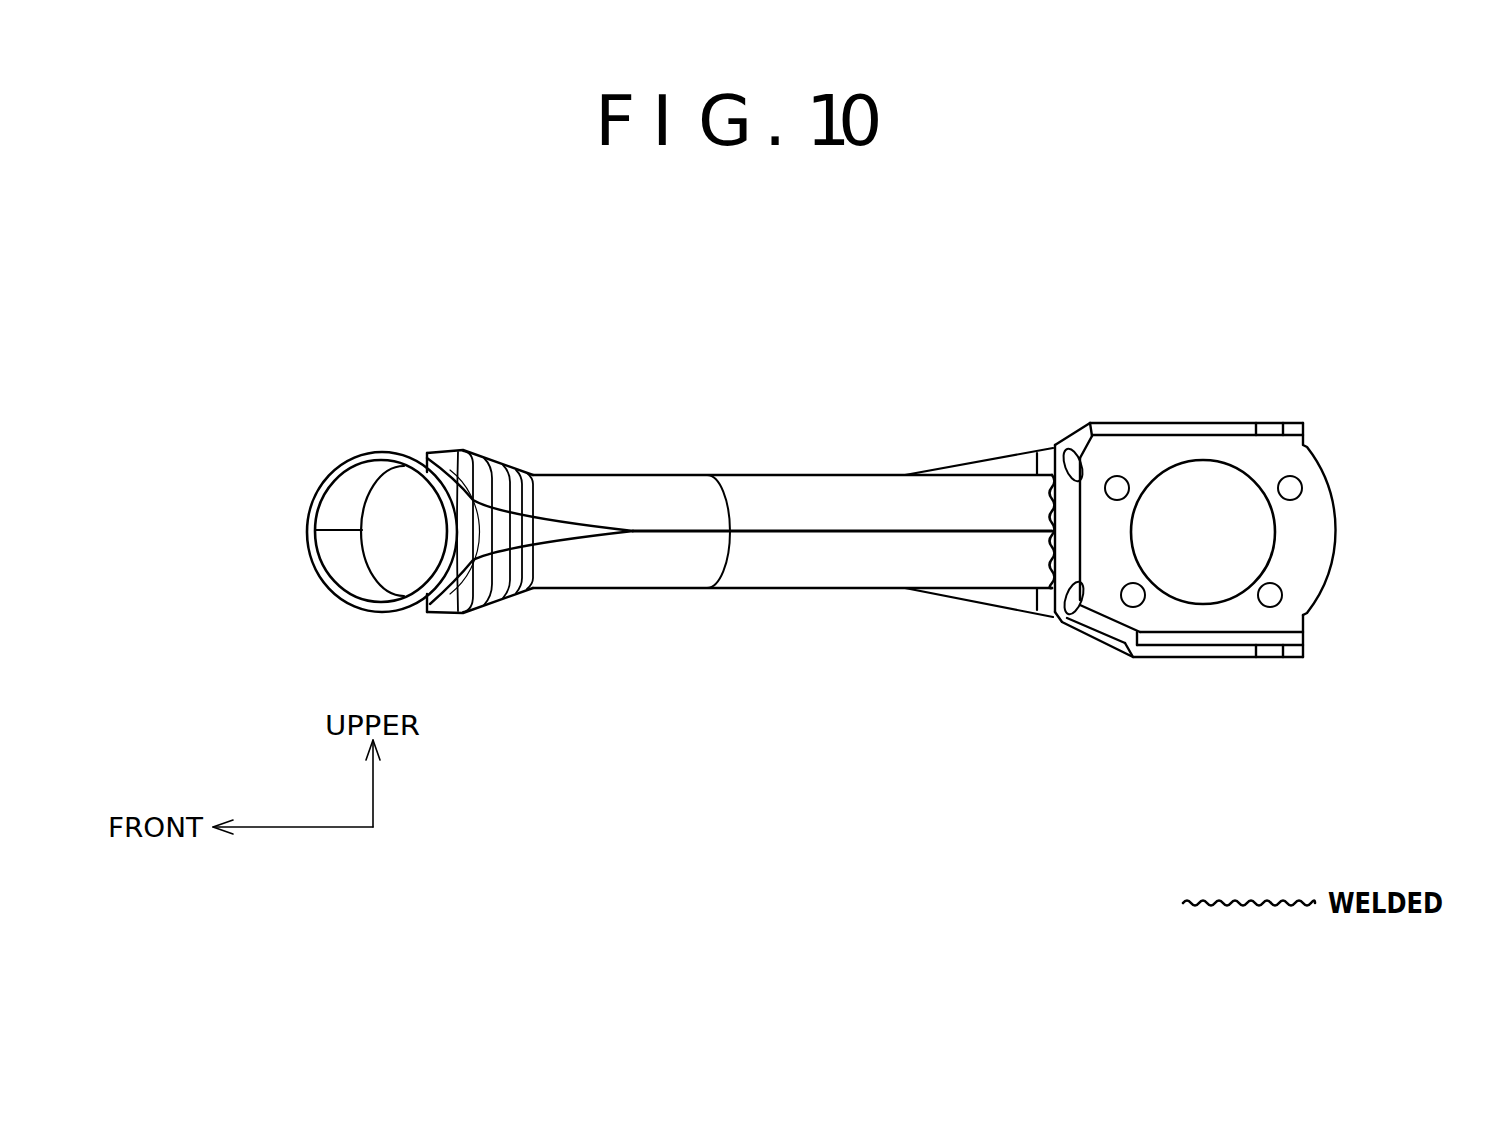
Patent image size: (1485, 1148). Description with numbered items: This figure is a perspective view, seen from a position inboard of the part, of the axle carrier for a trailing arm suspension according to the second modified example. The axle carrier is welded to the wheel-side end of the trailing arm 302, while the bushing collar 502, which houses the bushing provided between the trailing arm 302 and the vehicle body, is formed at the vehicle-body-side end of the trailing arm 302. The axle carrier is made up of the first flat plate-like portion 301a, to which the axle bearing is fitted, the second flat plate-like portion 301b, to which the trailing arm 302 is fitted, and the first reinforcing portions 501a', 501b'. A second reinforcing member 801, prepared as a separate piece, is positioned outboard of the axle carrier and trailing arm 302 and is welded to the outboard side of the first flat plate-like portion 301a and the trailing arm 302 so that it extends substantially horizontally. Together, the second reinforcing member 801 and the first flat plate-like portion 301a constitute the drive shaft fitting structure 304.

The bushing collar 502 is at (345, 563).
The trailing arm 302 is at (815, 562).
The second reinforcing member 801 is at (990, 467).
The second flat plate-like portion 301b is at (1050, 616).
The first flat plate-like portion 301a is at (1310, 518).
The drive shaft fitting structure 304 is at (1207, 587).
The first reinforcing portion 501a' is at (1221, 371).
The first reinforcing portion 501b' is at (1288, 697).